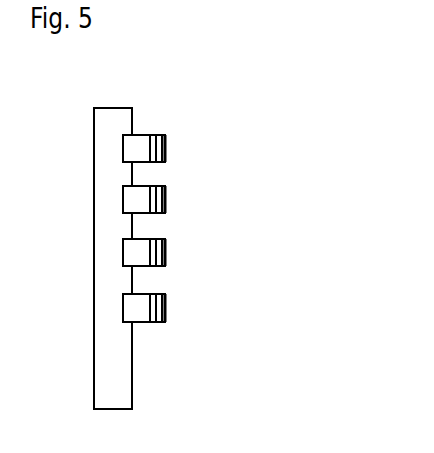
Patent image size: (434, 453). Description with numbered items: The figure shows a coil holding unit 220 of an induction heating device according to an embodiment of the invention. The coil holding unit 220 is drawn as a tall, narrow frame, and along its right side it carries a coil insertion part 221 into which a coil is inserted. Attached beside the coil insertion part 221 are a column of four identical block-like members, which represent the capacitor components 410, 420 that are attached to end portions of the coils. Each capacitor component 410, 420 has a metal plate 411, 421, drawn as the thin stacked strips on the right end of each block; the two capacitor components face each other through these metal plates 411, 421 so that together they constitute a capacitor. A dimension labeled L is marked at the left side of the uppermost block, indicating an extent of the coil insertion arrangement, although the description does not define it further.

The coil holding unit 220 is at (132, 381).
The coil insertion part 221 is at (132, 134).
The capacitor component 410 is at (233, 219).
The capacitor component 420 is at (233, 219).
The metal plate 411 is at (229, 228).
The metal plate 421 is at (165, 160).
The length L is at (122, 150).